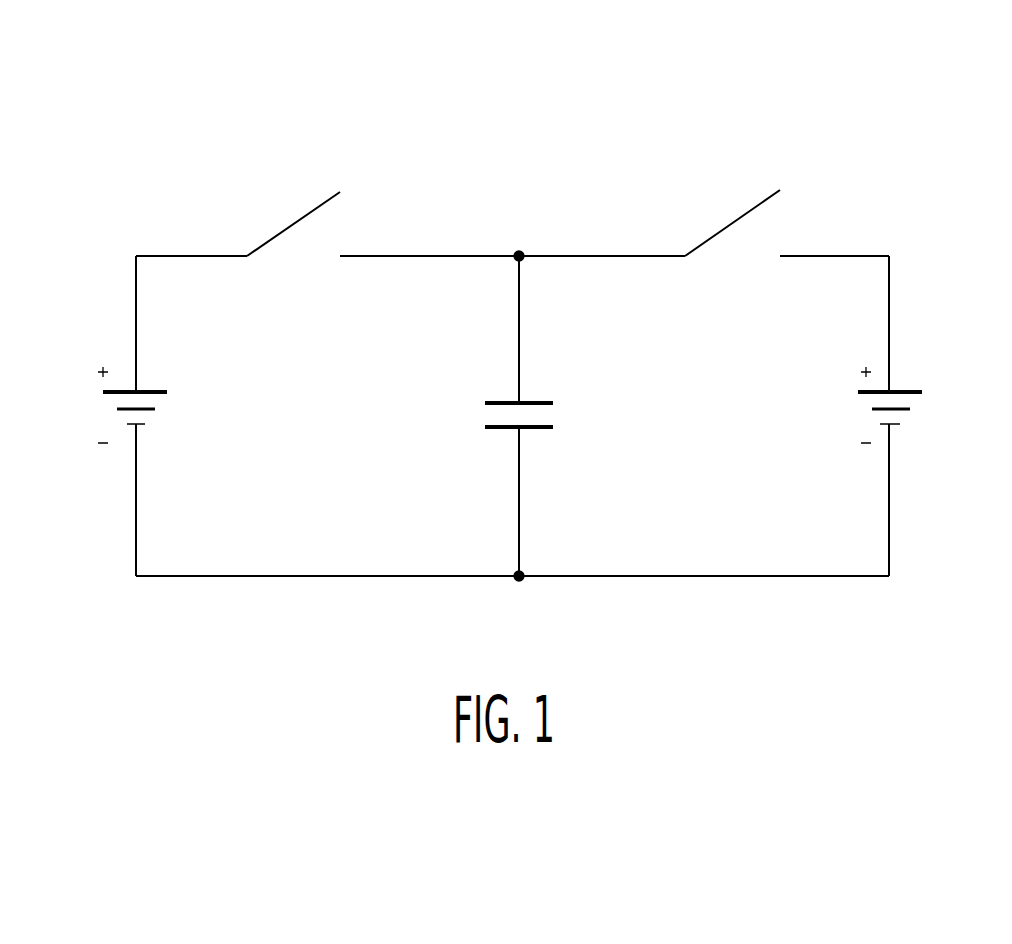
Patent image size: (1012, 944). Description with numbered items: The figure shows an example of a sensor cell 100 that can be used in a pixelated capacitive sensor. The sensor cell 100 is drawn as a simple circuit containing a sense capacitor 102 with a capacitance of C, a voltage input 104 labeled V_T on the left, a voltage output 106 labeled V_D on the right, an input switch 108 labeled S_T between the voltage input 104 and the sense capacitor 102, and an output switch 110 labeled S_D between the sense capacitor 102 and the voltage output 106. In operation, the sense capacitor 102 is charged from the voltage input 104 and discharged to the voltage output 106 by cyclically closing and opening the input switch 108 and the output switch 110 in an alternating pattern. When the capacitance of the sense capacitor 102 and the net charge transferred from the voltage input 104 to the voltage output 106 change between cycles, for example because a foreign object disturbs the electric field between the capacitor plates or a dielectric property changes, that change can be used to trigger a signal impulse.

The sensor cell 100 is at (927, 174).
The sense capacitor 102 is at (537, 400).
The voltage input 104 is at (153, 390).
The voltage output 106 is at (907, 390).
The input switch 108 is at (280, 230).
The output switch 110 is at (725, 225).